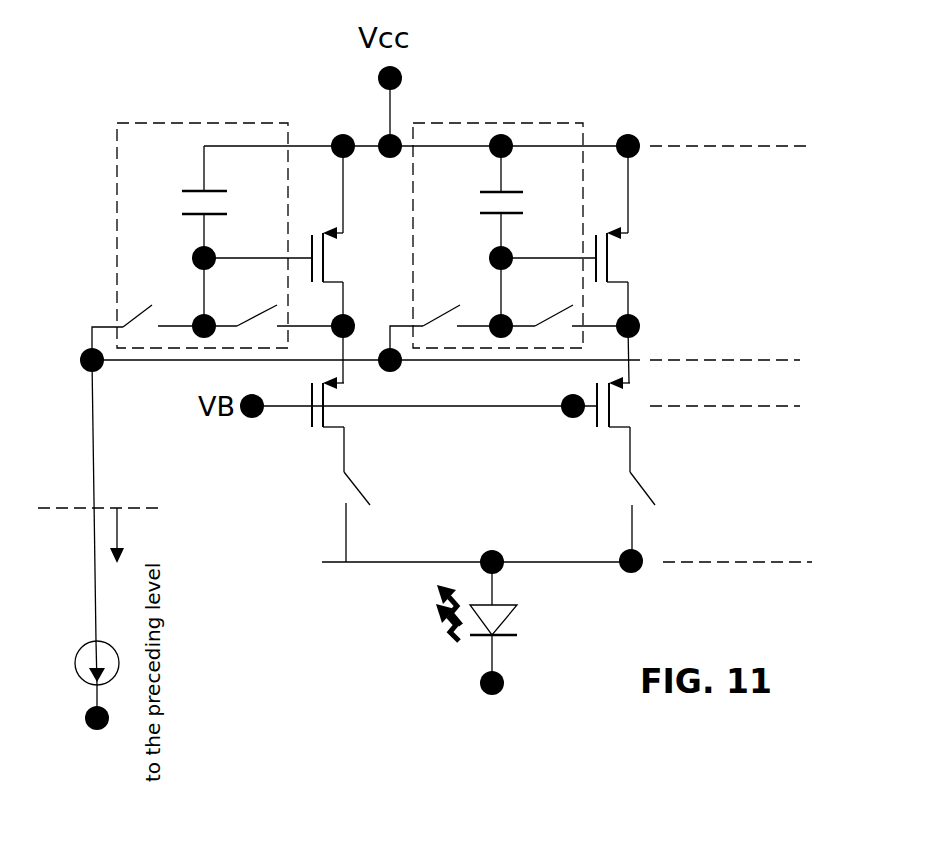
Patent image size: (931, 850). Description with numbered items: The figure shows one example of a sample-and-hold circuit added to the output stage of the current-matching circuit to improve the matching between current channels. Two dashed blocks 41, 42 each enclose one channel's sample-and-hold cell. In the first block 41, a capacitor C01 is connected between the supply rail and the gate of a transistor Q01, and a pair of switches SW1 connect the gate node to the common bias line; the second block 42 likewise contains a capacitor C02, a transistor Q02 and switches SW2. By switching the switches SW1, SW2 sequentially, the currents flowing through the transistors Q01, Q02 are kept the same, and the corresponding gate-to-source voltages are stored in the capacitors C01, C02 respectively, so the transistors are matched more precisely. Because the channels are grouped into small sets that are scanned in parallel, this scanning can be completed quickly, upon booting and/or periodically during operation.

The first current source unit 41 is at (148, 123).
The second current source unit 42 is at (477, 123).
The capacitor C01 is at (177, 202).
The capacitor C02 is at (471, 202).
The transistor Q01 is at (354, 236).
The transistor Q02 is at (641, 236).
The switch SW1 is at (217, 319).
The switch SW2 is at (509, 319).